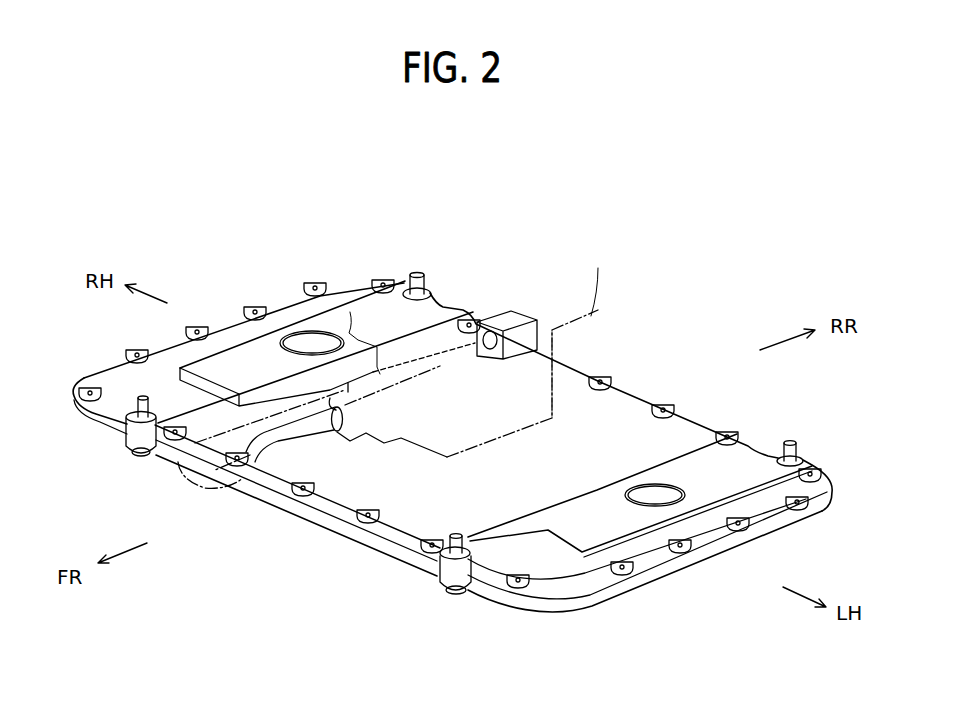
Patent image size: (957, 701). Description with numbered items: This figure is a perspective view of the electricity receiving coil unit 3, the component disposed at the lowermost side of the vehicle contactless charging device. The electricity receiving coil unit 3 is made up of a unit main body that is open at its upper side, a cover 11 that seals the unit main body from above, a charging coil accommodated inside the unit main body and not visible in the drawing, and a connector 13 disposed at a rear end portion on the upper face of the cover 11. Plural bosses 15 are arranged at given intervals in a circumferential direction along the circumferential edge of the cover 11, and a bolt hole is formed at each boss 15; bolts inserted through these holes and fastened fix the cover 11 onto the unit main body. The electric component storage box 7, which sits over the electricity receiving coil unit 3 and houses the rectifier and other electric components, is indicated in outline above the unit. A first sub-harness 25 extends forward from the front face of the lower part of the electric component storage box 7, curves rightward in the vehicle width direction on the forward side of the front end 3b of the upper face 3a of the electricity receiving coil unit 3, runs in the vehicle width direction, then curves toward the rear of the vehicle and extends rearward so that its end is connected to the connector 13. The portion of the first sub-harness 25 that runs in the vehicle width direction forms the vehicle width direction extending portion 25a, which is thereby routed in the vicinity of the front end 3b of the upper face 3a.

The electricity receiving coil unit 3 is at (414, 244).
The upper face of the electricity receiving coil unit 3a is at (455, 564).
The front end of the upper face 3b is at (377, 545).
The electric component storage box 7 is at (587, 370).
The cover 11 is at (492, 478).
The connector 13 is at (512, 312).
The boss 15 is at (662, 543).
The first sub-harness 25 is at (293, 464).
The vehicle width direction extending portion 25a is at (200, 480).